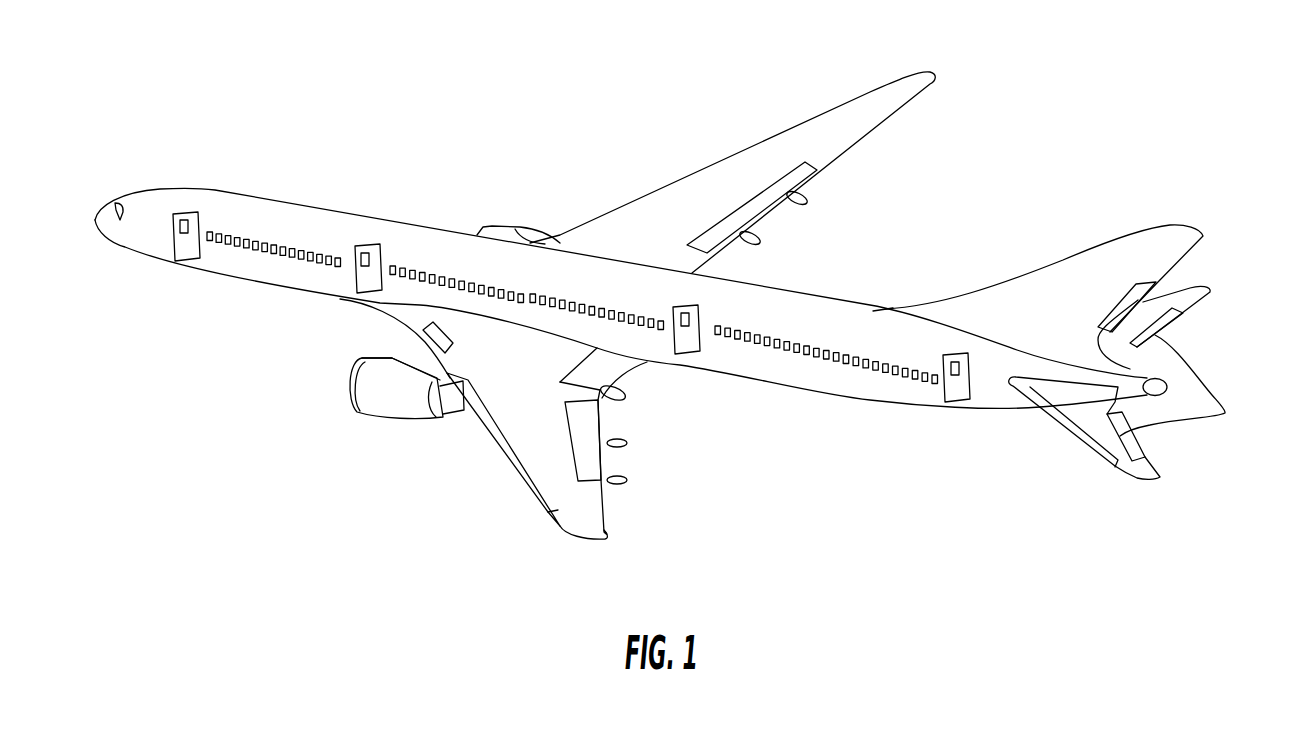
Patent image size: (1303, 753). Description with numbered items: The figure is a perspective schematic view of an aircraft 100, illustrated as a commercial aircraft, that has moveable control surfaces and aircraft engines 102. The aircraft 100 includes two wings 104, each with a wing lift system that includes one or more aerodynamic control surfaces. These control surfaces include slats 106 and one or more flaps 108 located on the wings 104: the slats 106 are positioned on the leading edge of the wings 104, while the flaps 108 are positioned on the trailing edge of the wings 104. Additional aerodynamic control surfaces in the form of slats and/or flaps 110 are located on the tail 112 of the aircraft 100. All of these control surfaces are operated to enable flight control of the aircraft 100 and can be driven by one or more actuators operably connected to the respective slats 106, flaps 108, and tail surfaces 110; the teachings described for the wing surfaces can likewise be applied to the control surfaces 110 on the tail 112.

The aircraft 100 is at (678, 317).
The aircraft engines 102 is at (354, 412).
The wings 104 is at (755, 165).
The slats 106 is at (512, 478).
The flaps 108 is at (768, 213).
The slats and/or flaps 110 is at (1141, 283).
The tail 112 is at (1003, 263).